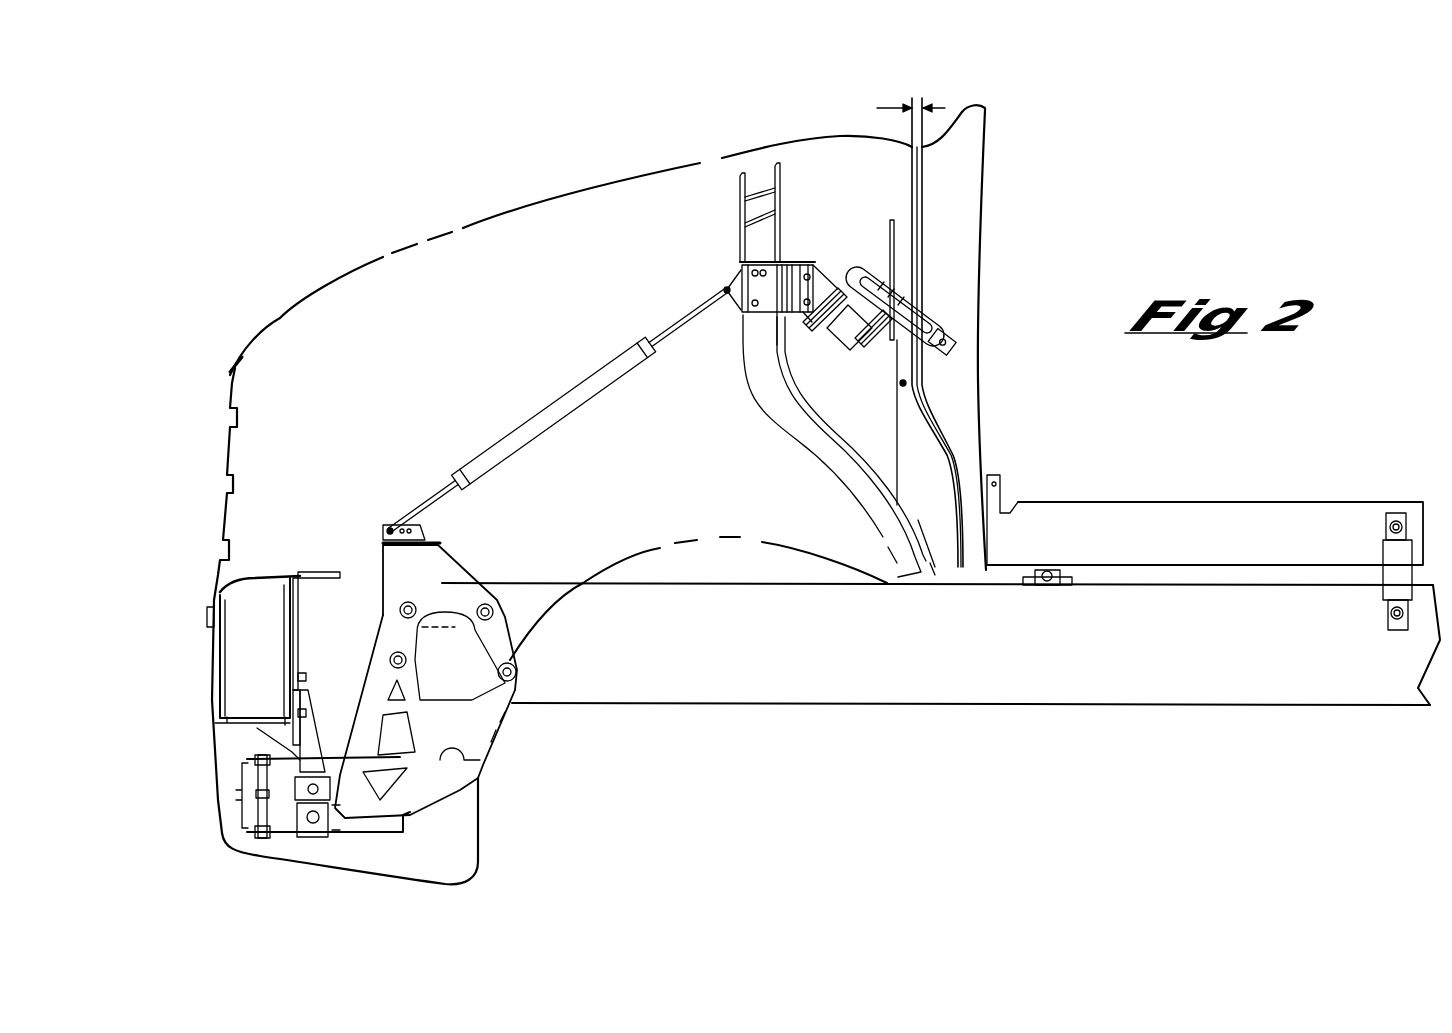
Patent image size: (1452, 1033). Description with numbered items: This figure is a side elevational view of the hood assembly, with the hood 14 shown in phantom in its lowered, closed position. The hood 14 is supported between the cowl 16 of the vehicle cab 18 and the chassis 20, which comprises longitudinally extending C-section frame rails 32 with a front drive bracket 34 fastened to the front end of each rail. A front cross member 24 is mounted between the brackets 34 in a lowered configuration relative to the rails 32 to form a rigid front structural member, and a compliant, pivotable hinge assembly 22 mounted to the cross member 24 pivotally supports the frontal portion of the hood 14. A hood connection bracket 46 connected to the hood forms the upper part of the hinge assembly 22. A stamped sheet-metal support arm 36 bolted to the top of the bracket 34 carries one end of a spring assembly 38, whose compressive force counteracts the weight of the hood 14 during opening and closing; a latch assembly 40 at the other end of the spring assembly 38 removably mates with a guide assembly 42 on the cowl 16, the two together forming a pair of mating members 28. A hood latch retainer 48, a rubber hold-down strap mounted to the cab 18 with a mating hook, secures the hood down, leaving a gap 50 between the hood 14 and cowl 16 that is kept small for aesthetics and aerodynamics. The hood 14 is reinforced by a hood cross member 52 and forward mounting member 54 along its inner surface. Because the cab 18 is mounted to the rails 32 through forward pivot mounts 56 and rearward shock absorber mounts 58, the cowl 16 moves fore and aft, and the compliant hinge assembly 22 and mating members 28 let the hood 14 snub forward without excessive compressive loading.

The hood 14 is at (513, 212).
The cowl 16 is at (963, 112).
The vehicle cab 18 is at (1073, 502).
The chassis 20 is at (478, 668).
The hinge assembly 22 is at (335, 710).
The front cross member 24 is at (235, 815).
The mating members 28 is at (840, 200).
The frame rail 32 is at (730, 683).
The front drive bracket 34 is at (410, 777).
The support arm 36 is at (435, 567).
The spring assembly 38 is at (573, 405).
The latch assembly 40 is at (812, 333).
The guide assembly 42 is at (892, 358).
The hood connection bracket 46 is at (290, 703).
The hood latch retainer 48 is at (929, 319).
The gap 50 is at (885, 108).
The hood cross member 52 is at (740, 206).
The forward mounting member 54 is at (300, 603).
The pivot mount 56 is at (1047, 582).
The shock absorber mount 58 is at (1400, 575).